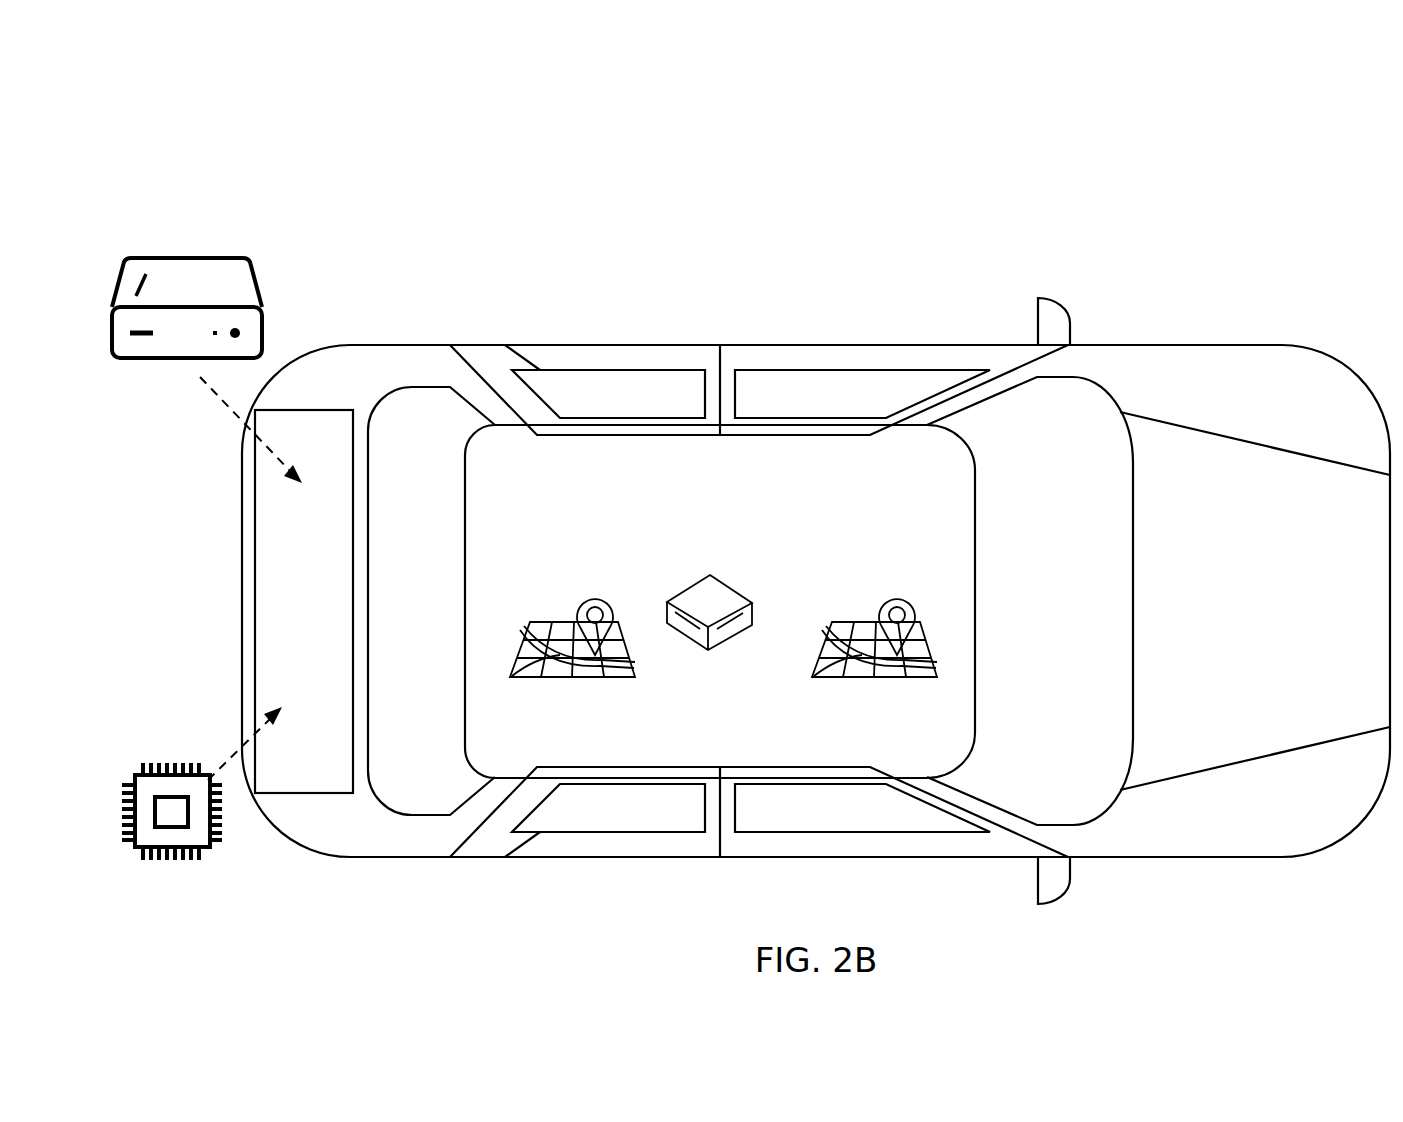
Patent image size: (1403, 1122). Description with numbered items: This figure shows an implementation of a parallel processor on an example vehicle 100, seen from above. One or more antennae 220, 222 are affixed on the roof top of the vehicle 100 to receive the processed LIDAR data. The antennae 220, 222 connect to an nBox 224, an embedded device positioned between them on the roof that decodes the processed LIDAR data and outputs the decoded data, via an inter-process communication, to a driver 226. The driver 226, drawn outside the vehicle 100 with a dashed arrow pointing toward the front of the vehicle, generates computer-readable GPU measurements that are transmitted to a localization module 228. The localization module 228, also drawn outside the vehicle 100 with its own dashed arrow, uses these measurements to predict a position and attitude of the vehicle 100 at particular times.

The vehicle 100 is at (257, 127).
The antenna 220 is at (592, 597).
The antenna 222 is at (892, 595).
The nBox 224 is at (707, 577).
The driver 226 is at (180, 257).
The localization module 228 is at (208, 845).